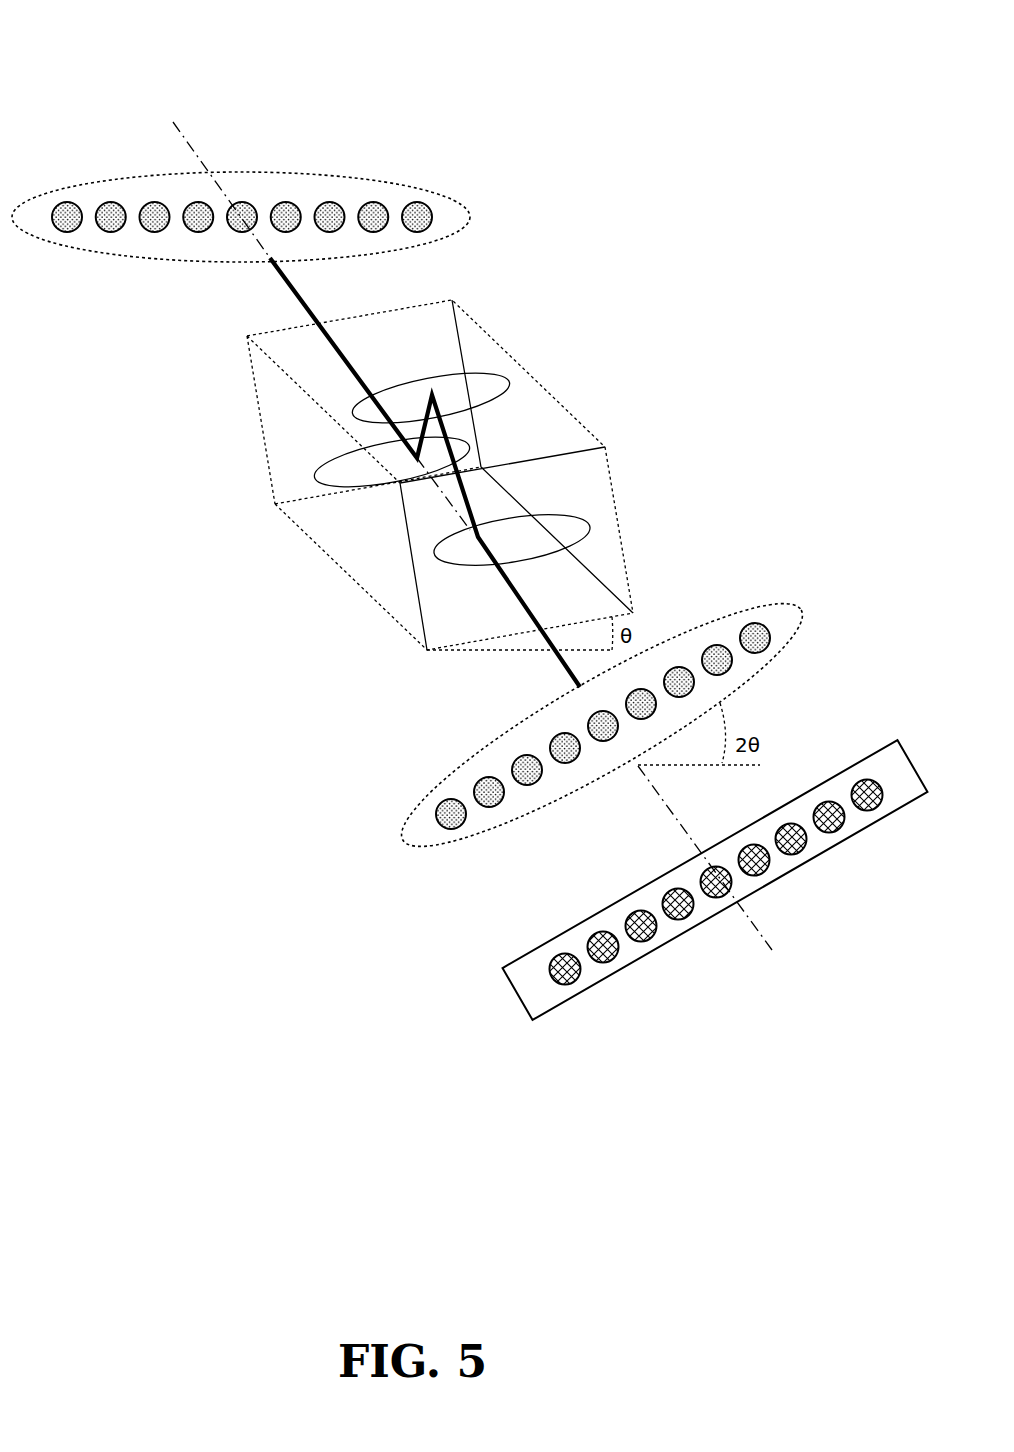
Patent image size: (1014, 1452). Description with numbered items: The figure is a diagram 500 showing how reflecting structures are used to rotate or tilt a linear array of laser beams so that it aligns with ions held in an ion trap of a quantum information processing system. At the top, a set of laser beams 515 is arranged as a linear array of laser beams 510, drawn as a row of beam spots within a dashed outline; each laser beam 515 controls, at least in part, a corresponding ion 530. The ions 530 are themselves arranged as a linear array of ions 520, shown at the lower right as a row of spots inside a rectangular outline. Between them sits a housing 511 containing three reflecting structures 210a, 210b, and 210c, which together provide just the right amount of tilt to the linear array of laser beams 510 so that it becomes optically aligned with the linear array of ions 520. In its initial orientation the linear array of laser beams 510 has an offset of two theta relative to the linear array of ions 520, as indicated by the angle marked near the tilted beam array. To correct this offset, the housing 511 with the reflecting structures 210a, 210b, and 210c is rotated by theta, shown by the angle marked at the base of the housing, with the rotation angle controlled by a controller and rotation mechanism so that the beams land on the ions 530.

The diagram 500 is at (150, 52).
The linear array of laser beams 510 is at (83, 250).
The laser beam 515 is at (330, 202).
The housing 511 is at (412, 633).
The reflecting structure 210a is at (335, 470).
The reflecting structure 210b is at (485, 380).
The reflecting structure 210c is at (552, 530).
The linear array of ions 520 is at (863, 757).
The ion 530 is at (578, 980).